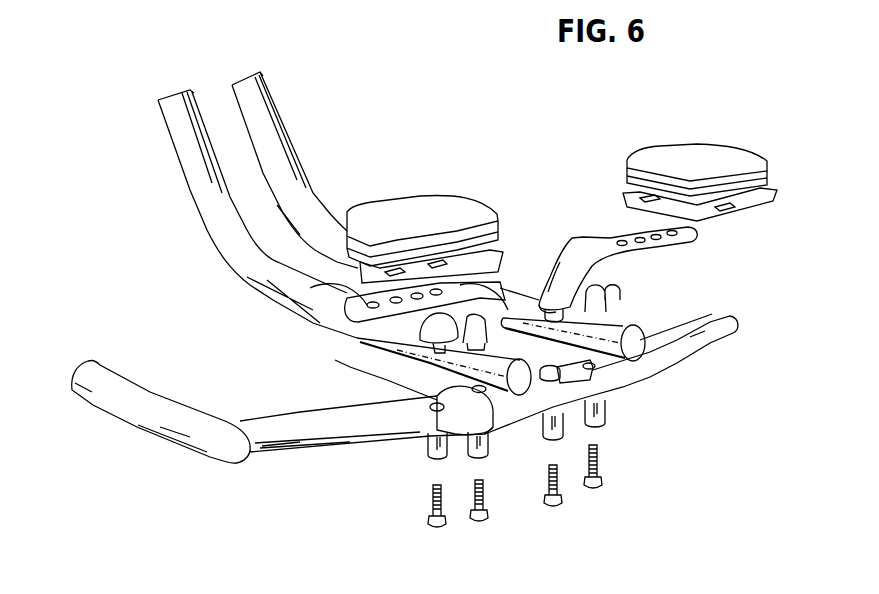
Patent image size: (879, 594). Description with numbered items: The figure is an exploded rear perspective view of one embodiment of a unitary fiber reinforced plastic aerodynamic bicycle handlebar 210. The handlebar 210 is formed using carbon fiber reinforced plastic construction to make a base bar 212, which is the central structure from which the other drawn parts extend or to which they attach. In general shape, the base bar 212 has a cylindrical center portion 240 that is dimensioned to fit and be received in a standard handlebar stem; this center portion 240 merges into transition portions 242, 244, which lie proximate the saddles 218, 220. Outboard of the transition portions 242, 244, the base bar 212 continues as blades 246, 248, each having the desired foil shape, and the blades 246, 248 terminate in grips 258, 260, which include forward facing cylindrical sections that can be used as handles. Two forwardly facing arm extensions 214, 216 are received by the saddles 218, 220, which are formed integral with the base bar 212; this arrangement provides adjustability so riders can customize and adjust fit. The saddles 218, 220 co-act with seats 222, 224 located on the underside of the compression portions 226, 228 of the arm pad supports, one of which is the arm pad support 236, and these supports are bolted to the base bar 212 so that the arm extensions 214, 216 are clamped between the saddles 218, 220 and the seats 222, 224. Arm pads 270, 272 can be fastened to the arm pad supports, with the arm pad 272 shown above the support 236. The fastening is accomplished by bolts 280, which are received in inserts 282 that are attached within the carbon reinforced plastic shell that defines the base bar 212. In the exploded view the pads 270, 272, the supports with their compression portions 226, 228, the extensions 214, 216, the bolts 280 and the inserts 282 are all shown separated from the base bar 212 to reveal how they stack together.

The handlebar 210 is at (230, 462).
The base bar 212 is at (693, 353).
The arm extension 214 is at (157, 115).
The arm extension 216 is at (254, 70).
The saddle 218 is at (460, 400).
The saddle 220 is at (637, 370).
The seat 222 is at (337, 360).
The seat 224 is at (640, 272).
The compression portion 226 is at (543, 292).
The compression portion 228 is at (552, 283).
The arm pad support 236 is at (313, 287).
The cylindrical center portion 240 is at (607, 473).
The transition portion 242 is at (400, 424).
The transition portion 244 is at (643, 378).
The blade 246 is at (292, 445).
The blade 248 is at (707, 333).
The grip 258 is at (78, 363).
The grip 260 is at (572, 238).
The arm pad 270 is at (400, 210).
The arm pad 272 is at (683, 142).
The bolt 280 is at (428, 522).
The insert 282 is at (422, 452).